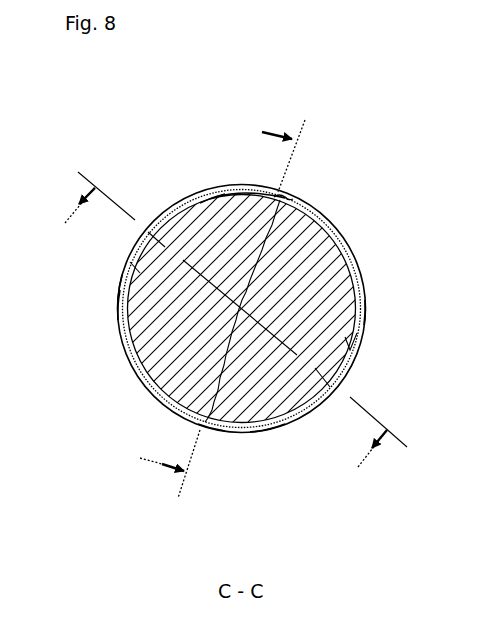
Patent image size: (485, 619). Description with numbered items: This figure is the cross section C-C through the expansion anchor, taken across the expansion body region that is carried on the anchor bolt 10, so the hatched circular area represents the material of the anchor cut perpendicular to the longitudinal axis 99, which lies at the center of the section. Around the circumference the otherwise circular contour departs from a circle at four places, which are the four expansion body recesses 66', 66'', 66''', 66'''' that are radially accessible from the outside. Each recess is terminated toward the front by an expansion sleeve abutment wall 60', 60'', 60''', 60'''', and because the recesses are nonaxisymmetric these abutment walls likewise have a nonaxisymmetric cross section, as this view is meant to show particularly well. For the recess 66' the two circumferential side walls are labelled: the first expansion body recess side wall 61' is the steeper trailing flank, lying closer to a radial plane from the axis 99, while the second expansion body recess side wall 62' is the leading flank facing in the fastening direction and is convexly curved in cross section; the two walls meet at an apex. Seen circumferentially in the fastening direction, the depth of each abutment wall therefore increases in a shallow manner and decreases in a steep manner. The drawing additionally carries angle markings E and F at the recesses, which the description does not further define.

The anchor bolt 10 is at (307, 298).
The longitudinal axis 99 is at (240, 308).
The second expansion body recess side wall 62' is at (220, 127).
The expansion sleeve abutment wall 60' is at (266, 124).
The first expansion body recess side wall 61' is at (324, 205).
The expansion body recess 66' is at (190, 168).
The expansion body recess 66'' is at (65, 301).
The expansion sleeve abutment wall 60'' is at (94, 331).
The expansion body recess 66'''' is at (410, 312).
The expansion sleeve abutment wall 60'''' is at (393, 348).
The expansion body recess 66''' is at (295, 449).
The expansion sleeve abutment wall 60''' is at (233, 475).
The angle E is at (204, 309).
The angle F is at (225, 349).